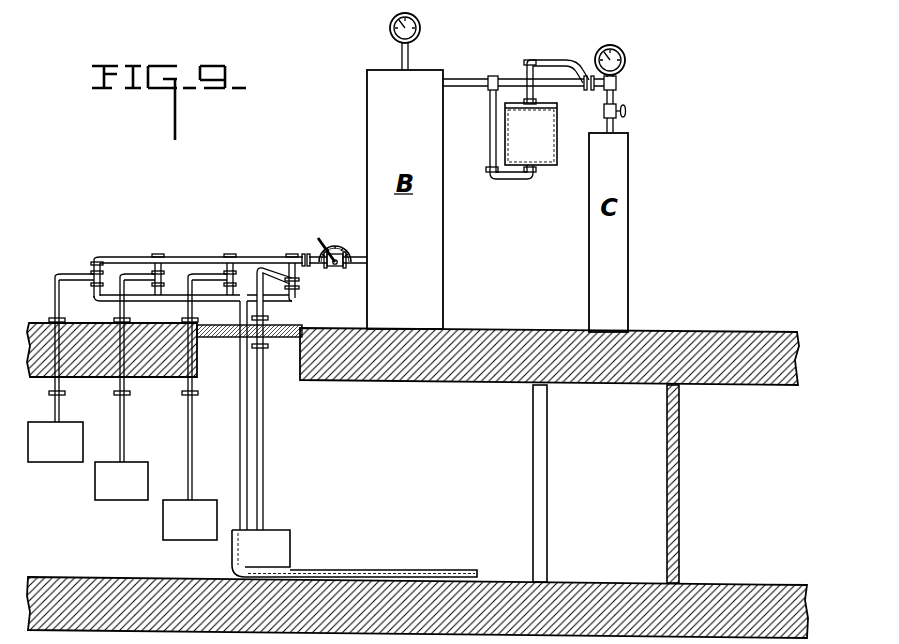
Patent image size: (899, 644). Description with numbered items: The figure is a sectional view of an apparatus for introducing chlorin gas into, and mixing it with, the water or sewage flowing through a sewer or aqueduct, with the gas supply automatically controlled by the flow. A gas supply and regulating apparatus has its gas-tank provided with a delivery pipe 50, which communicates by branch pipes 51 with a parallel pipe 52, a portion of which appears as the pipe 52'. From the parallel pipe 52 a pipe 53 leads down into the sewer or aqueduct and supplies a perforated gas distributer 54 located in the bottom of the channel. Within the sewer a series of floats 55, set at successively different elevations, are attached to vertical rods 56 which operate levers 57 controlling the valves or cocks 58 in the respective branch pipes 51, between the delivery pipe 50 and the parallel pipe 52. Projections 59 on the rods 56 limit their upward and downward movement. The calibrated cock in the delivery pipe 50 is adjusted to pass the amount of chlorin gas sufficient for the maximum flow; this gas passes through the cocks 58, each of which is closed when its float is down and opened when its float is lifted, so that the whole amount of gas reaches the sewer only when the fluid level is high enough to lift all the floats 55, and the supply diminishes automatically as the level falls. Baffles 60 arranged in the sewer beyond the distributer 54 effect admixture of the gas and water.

The delivery pipe 50 is at (345, 253).
The branch pipes 51 is at (158, 270).
The parallel pipe 52 is at (263, 400).
The lower pipe branch 52' is at (167, 309).
The pipe 53 is at (261, 412).
The perforated gas distributer 54 is at (325, 571).
The floats 55 is at (122, 481).
The vertical rods 56 is at (118, 407).
The levers 57 is at (212, 277).
The valves or cocks 58 is at (160, 277).
The projections 59 is at (64, 320).
The baffles 60 is at (538, 467).